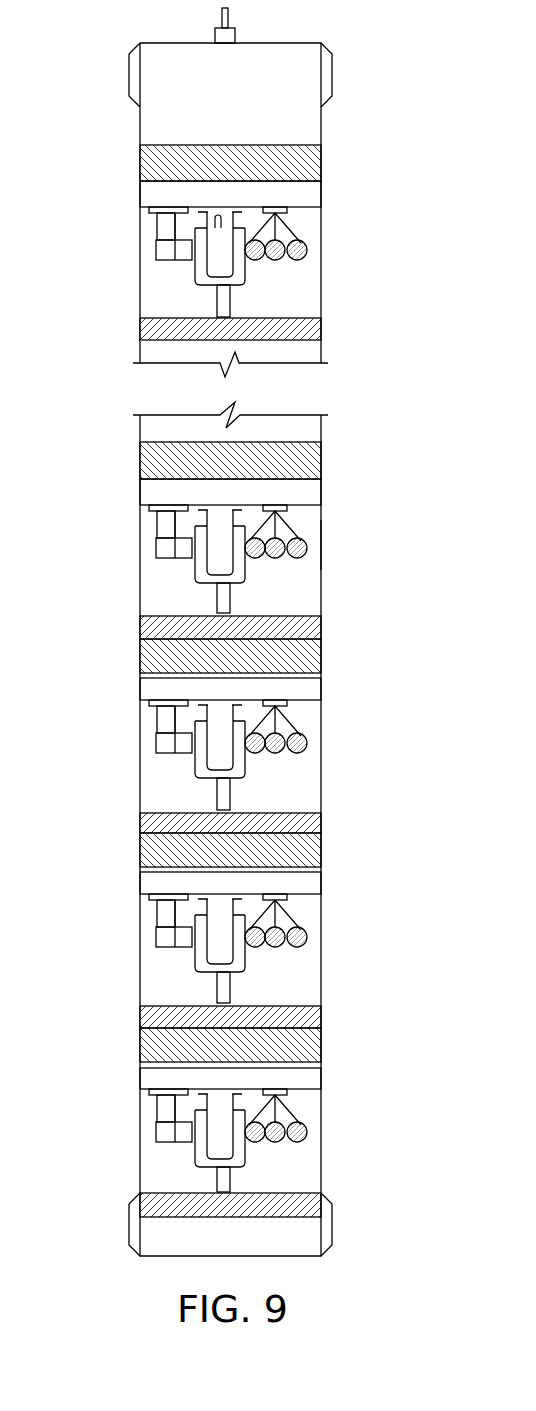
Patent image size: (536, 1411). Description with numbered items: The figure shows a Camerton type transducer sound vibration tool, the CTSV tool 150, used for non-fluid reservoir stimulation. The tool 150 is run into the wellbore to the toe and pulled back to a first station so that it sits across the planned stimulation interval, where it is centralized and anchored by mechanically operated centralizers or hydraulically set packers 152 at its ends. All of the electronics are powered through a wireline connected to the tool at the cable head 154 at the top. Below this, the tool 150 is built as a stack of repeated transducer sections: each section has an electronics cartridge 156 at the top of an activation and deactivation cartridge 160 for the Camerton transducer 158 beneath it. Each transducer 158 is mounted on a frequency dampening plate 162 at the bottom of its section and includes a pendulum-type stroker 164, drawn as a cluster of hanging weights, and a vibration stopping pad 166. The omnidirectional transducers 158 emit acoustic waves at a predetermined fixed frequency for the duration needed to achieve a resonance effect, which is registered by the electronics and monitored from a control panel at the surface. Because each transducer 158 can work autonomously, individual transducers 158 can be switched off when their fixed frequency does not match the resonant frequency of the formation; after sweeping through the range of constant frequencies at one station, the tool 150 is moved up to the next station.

The CTSV tool 150 is at (322, 543).
The packers 152 is at (128, 77).
The cable head 154 is at (222, 13).
The electronics cartridge 156 is at (139, 165).
The Camerton transducer 158 is at (245, 280).
The activation and deactivation cartridge 160 is at (303, 192).
The frequency dampening plate 162 is at (322, 329).
The pendulum-type stroker 164 is at (305, 248).
The vibration stopping pad 166 is at (156, 250).